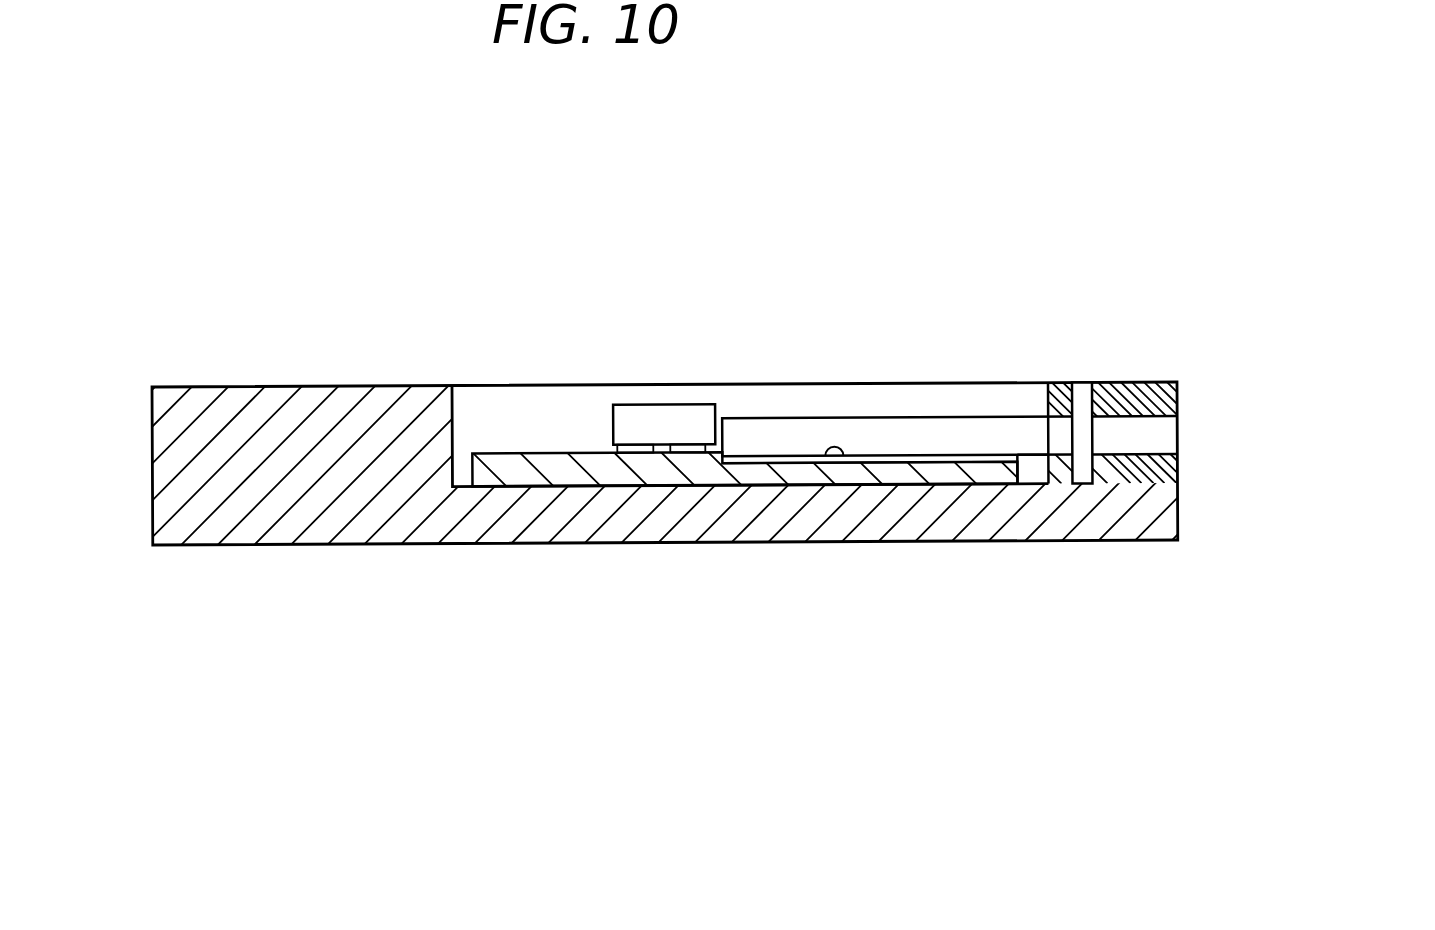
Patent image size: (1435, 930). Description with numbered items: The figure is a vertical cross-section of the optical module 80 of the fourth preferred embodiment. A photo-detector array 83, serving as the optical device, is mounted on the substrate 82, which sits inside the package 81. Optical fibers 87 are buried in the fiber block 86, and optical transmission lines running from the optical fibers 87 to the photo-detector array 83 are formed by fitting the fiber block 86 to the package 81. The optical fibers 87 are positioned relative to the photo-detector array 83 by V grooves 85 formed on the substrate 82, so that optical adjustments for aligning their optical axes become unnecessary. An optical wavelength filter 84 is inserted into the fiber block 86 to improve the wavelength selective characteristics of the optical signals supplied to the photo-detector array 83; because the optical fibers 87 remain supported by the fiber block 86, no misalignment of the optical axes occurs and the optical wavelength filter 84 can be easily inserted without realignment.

The optical module 80 is at (322, 343).
The package 81 is at (313, 544).
The substrate 82 is at (605, 473).
The photo-detector array 83 is at (632, 412).
The optical wavelength filter 84 is at (1087, 384).
The V groove 85 is at (836, 452).
The fiber block 86 is at (1120, 482).
The optical fiber 87 is at (862, 433).